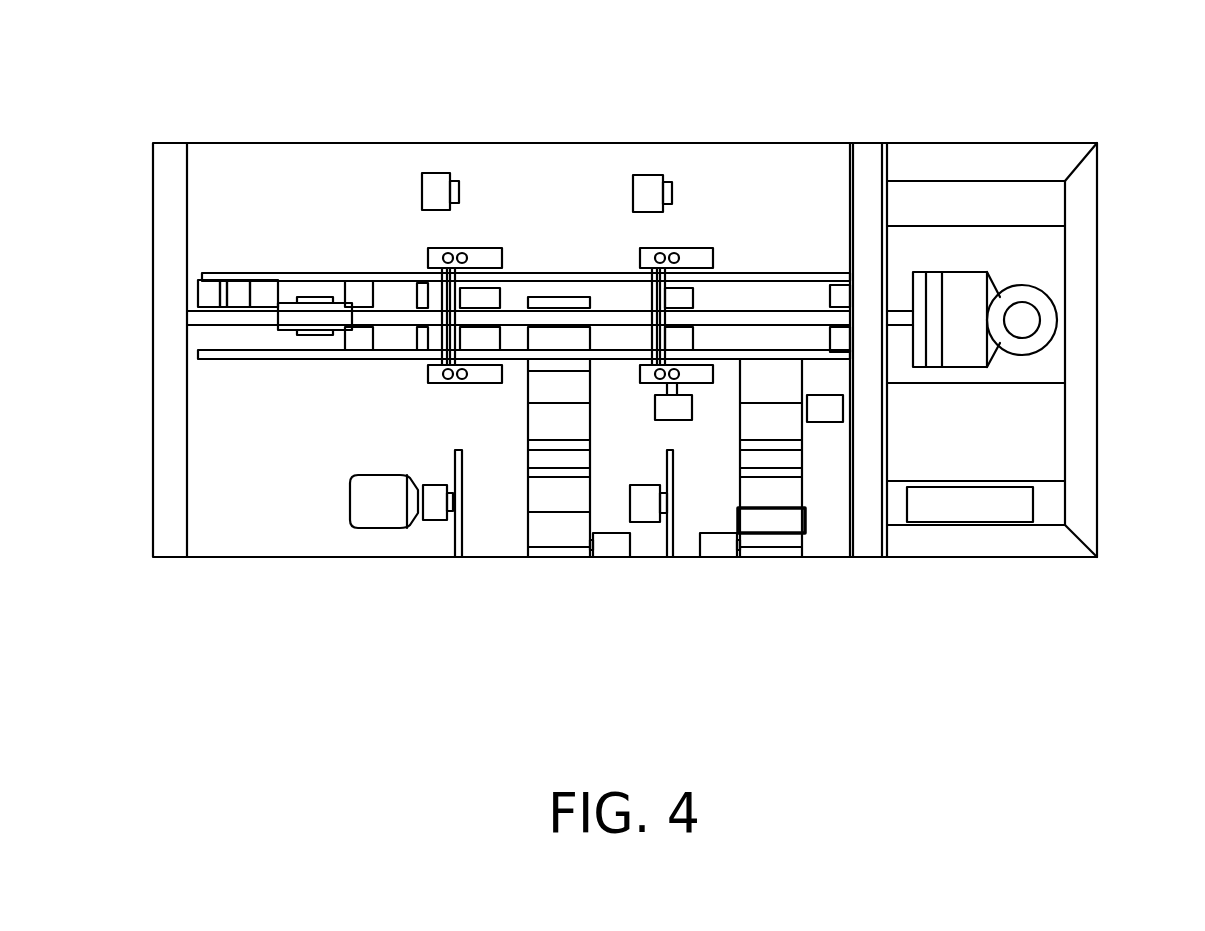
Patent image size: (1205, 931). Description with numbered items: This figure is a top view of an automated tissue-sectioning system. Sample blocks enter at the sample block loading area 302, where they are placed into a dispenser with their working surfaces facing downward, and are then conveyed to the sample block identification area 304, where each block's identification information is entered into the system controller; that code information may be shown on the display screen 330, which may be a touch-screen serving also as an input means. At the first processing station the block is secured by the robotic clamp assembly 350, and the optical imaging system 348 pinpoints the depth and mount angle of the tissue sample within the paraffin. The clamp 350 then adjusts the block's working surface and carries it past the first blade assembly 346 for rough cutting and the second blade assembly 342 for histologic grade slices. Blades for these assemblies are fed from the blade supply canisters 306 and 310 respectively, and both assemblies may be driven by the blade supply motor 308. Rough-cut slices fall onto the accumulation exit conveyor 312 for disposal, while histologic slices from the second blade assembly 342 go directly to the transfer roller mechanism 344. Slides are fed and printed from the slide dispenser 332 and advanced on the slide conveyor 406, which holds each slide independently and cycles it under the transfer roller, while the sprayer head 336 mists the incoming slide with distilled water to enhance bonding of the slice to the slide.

The sample block loading area 302 is at (208, 293).
The sample block identification area 304 is at (238, 293).
The robotic clamp assembly 350 is at (300, 300).
The optical imaging system 348 is at (380, 311).
The first blade assembly 346 is at (465, 297).
The second blade assembly 342 is at (657, 320).
The transfer roller mechanism 344 is at (682, 297).
The sprayer head 336 is at (833, 413).
The blade supply motor 308 is at (350, 483).
The blade supply canister 306 is at (463, 512).
The accumulation exit conveyor 312 is at (556, 522).
The blade supply canister 310 is at (673, 522).
The slide dispenser 332 is at (767, 520).
The slide conveyor 406 is at (790, 457).
The display screen 330 is at (1000, 510).